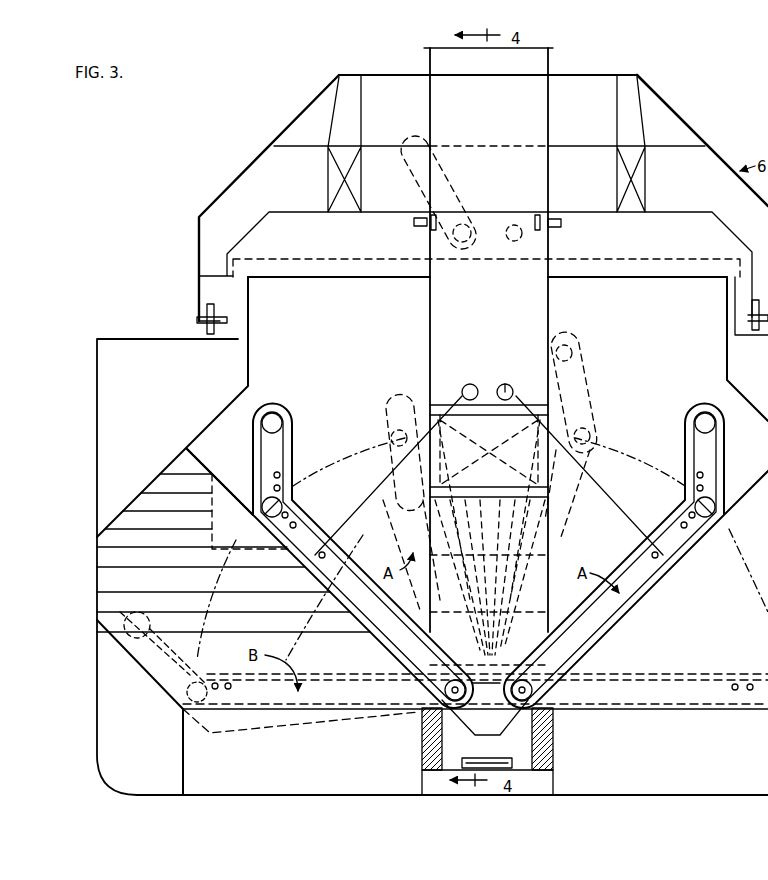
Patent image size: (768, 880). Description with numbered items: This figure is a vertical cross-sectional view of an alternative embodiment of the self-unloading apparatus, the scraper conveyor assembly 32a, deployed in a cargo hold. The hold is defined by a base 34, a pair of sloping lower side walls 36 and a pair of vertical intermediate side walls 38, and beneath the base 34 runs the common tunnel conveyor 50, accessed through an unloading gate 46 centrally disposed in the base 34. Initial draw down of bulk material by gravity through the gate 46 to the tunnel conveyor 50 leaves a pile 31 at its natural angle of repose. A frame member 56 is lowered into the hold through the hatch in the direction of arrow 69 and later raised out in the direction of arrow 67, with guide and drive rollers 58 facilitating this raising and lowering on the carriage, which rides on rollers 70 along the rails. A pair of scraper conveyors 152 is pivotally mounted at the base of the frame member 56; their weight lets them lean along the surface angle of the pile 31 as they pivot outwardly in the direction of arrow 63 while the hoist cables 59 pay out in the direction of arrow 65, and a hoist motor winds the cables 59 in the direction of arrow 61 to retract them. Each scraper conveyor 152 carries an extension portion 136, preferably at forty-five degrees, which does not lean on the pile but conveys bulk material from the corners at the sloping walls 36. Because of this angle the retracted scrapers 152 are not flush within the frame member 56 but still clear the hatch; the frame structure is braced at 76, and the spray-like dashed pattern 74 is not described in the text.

The scraper conveyor assembly 32a is at (703, 124).
The cross braces 76 is at (644, 180).
The rollers 70 is at (201, 323).
The vertical intermediate side walls 38 is at (99, 584).
The pile of bulk material 31 is at (196, 588).
The sloping lower side walls 36 is at (152, 672).
The base 34 is at (660, 711).
The unloading gate 46 is at (546, 760).
The tunnel conveyor 50 is at (447, 751).
The frame member 56 is at (428, 357).
The arrow 69 is at (410, 326).
The arrow 67 is at (558, 285).
The guide and drive rollers 58 is at (505, 383).
The arrow 61 is at (412, 538).
The cables 59 is at (305, 568).
The extension portion 136 is at (284, 403).
The scraper conveyor 152 is at (322, 531).
The arrow 65 is at (368, 509).
The arrow 63 is at (306, 451).
The spray pattern 74 is at (497, 603).